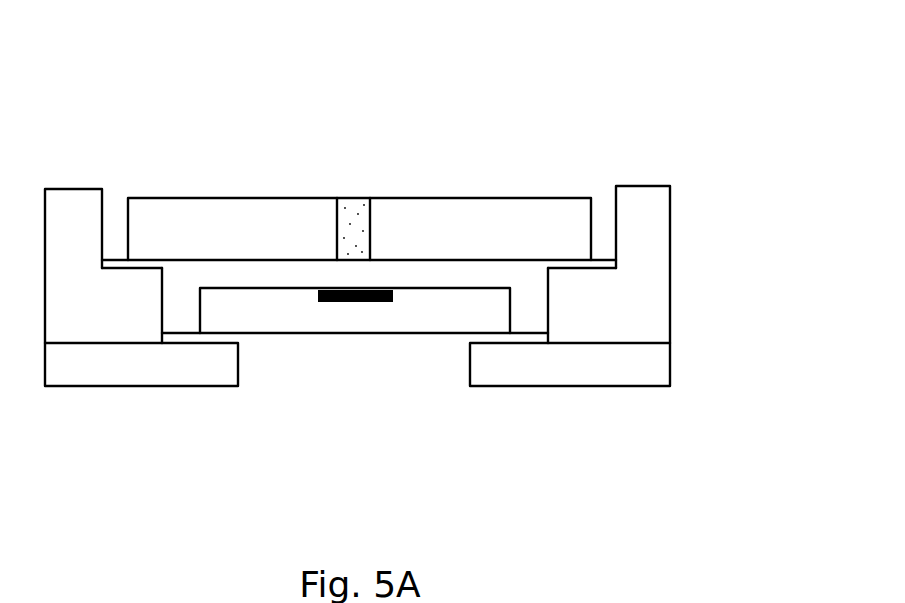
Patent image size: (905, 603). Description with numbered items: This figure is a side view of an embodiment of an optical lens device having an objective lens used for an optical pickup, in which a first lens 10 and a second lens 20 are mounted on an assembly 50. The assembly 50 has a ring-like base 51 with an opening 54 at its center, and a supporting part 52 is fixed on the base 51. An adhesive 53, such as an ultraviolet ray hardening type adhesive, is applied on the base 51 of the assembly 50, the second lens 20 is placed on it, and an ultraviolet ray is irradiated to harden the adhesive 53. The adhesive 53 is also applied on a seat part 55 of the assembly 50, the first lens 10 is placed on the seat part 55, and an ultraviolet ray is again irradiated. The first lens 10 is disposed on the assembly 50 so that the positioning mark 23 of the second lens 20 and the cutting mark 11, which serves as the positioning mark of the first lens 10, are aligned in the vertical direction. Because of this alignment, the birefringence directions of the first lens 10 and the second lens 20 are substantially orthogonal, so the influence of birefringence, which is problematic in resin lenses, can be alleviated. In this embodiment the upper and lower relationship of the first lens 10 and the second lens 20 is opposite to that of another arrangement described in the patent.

The first lens 10 is at (535, 198).
The cutting mark 11 is at (365, 198).
The second lens 20 is at (437, 333).
The positioning mark 23 is at (342, 302).
The assembly 50 is at (342, 47).
The base 51 is at (662, 366).
The supporting part 52 is at (655, 307).
The adhesive 53 is at (120, 267).
The opening 54 is at (263, 358).
The seat part 55 is at (580, 278).